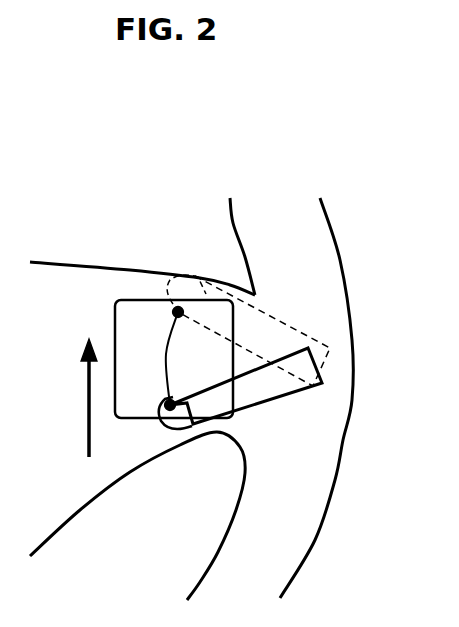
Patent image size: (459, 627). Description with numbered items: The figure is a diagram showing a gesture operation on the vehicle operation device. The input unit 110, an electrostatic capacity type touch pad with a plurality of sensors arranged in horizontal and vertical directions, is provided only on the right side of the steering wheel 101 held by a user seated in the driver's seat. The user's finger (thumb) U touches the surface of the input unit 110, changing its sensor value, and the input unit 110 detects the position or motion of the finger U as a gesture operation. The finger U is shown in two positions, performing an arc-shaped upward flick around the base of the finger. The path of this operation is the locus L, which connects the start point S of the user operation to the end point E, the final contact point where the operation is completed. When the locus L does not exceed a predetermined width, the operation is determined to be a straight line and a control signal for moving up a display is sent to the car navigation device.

The steering wheel 101 is at (58, 283).
The input unit 110 is at (130, 310).
The end point E is at (178, 312).
The locus L is at (165, 353).
The start point S is at (165, 399).
The finger U is at (272, 327).